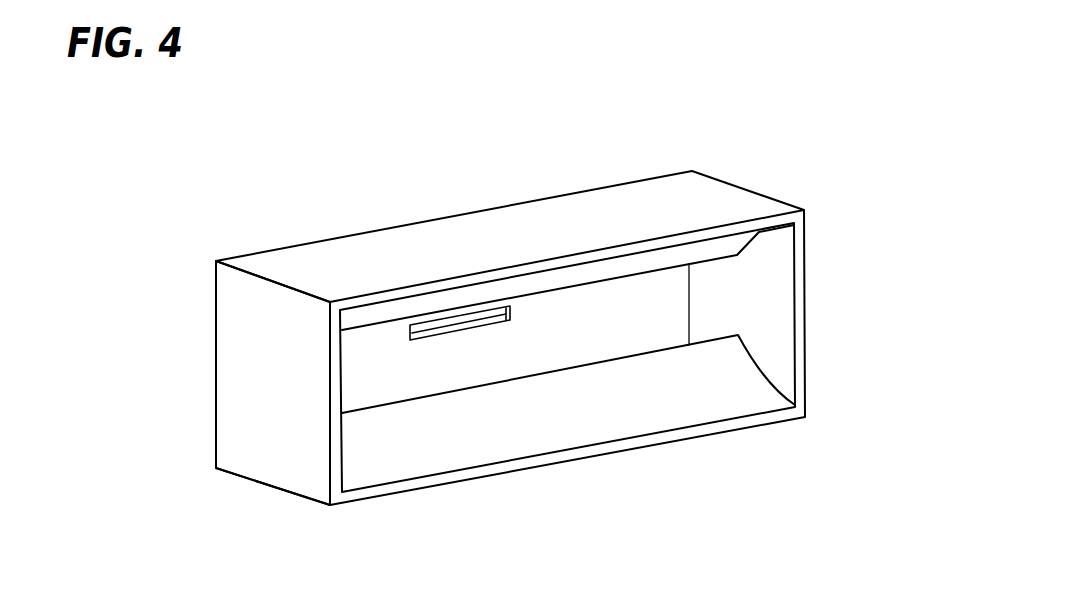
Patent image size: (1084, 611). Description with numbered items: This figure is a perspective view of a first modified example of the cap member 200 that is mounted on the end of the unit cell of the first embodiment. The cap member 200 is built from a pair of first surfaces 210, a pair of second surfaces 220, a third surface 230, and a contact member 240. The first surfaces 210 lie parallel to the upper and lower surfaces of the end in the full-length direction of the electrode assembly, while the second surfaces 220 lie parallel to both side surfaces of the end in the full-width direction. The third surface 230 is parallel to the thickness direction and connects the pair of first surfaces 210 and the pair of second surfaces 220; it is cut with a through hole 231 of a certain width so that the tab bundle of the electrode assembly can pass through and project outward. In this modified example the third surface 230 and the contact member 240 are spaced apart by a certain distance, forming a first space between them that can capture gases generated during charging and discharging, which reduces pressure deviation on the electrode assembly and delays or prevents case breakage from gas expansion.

The cap member 200 is at (438, 237).
The first surfaces 210 is at (365, 230).
The second surfaces 220 is at (238, 380).
The third surface 230 is at (650, 308).
The through hole 231 is at (500, 323).
The contact member 240 is at (733, 382).